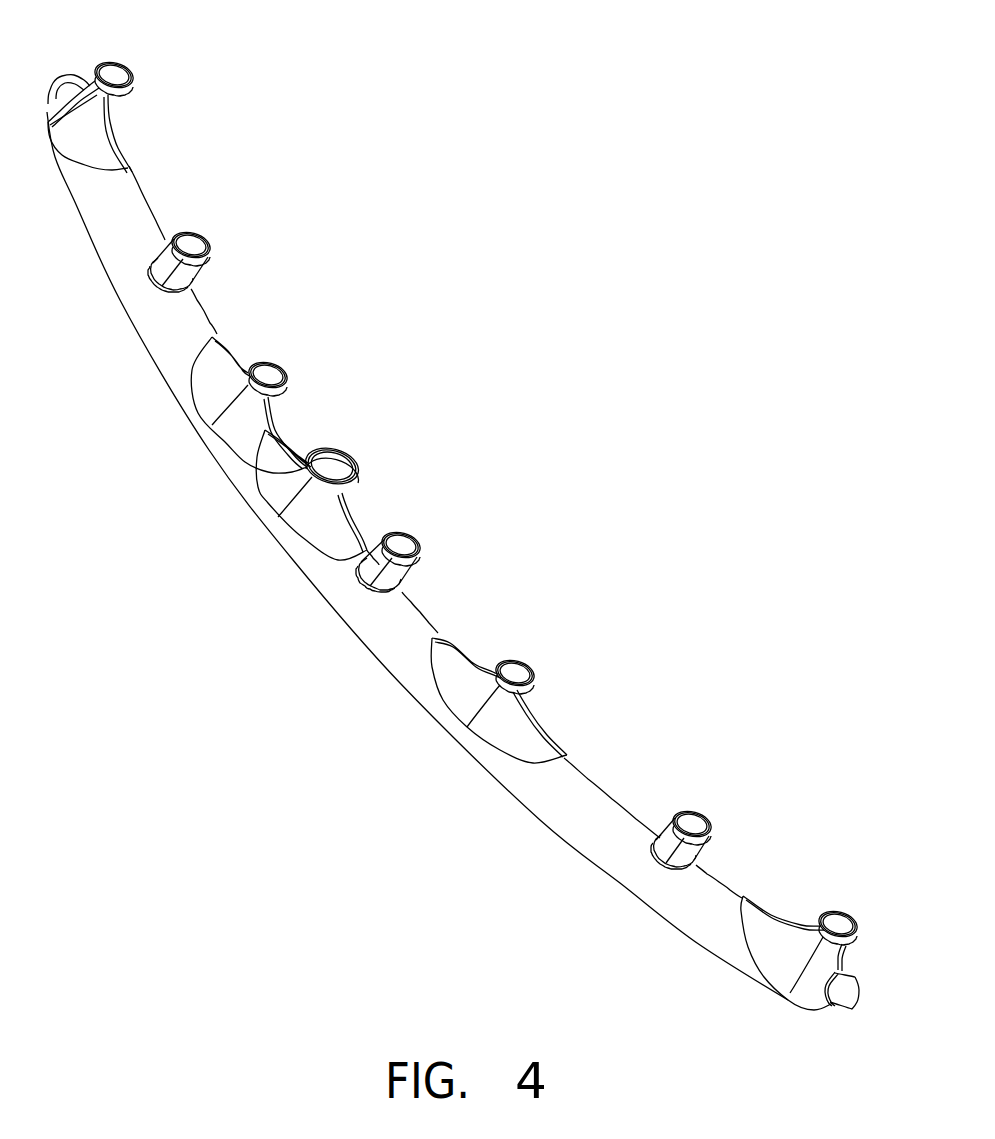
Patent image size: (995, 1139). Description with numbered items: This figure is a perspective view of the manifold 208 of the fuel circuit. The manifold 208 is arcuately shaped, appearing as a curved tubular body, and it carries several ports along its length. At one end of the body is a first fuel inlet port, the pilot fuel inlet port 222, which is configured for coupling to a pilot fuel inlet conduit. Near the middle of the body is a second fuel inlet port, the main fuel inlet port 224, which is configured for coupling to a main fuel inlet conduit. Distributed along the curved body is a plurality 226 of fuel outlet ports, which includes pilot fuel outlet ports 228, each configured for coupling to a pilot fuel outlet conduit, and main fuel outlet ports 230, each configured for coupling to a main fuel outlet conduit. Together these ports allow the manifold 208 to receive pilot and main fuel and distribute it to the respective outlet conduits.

The manifold 208 is at (540, 268).
The pilot fuel inlet port 222 is at (66, 76).
The main fuel inlet port 224 is at (340, 455).
The plurality of fuel outlet ports 226 is at (325, 238).
The pilot fuel outlet port 228 is at (198, 235).
The main fuel outlet port 230 is at (127, 70).